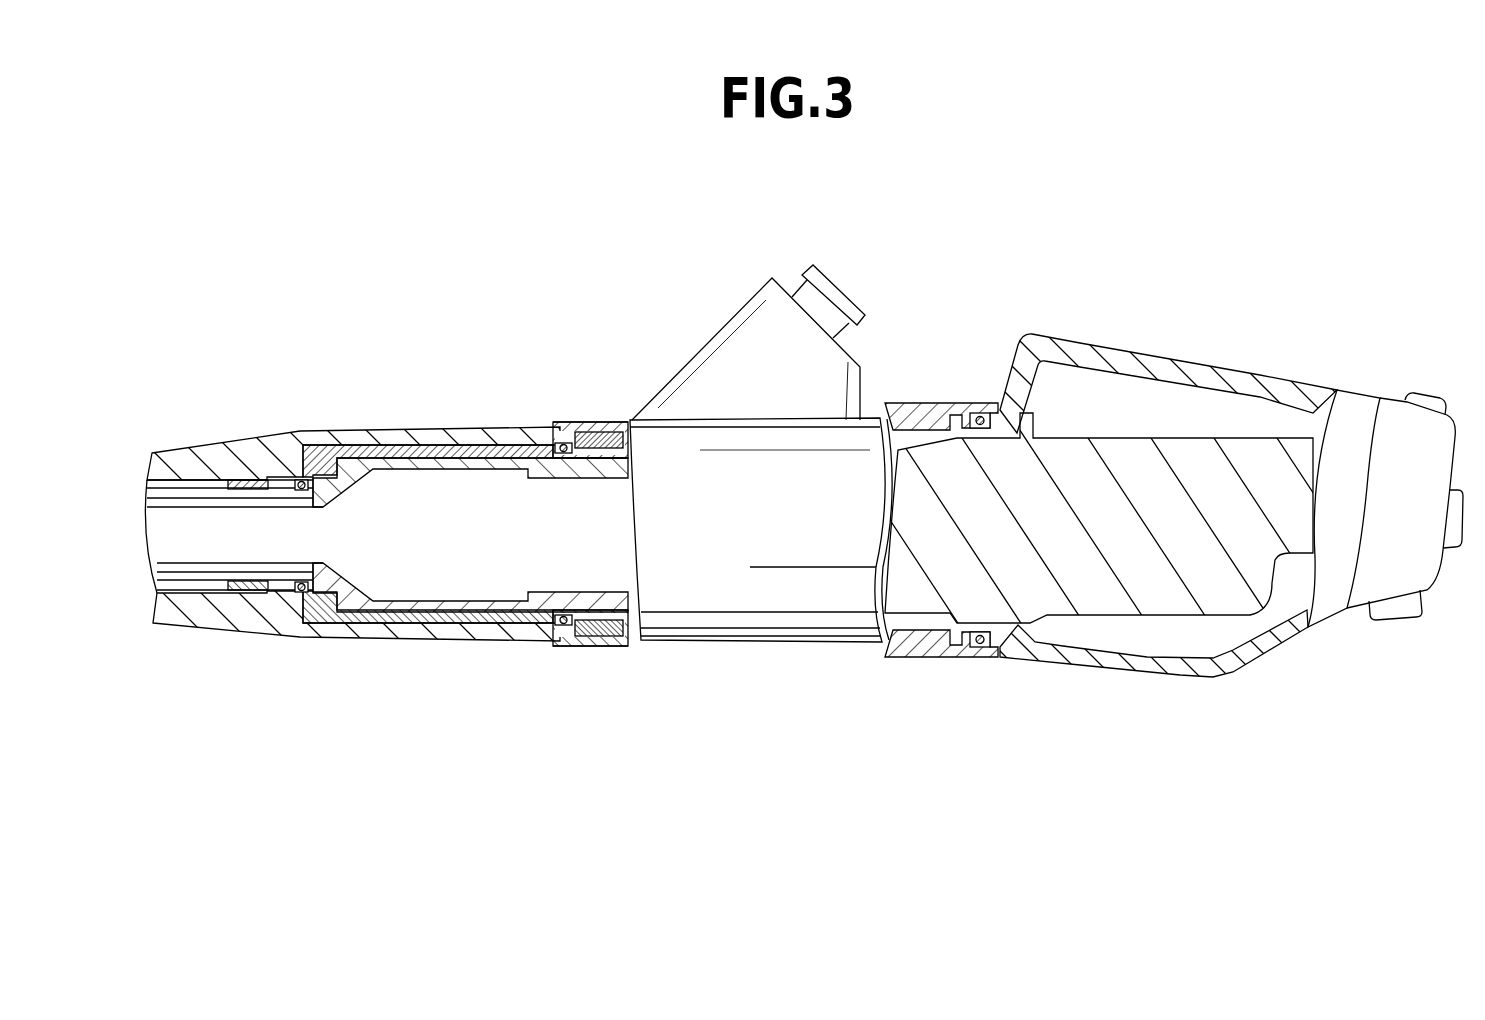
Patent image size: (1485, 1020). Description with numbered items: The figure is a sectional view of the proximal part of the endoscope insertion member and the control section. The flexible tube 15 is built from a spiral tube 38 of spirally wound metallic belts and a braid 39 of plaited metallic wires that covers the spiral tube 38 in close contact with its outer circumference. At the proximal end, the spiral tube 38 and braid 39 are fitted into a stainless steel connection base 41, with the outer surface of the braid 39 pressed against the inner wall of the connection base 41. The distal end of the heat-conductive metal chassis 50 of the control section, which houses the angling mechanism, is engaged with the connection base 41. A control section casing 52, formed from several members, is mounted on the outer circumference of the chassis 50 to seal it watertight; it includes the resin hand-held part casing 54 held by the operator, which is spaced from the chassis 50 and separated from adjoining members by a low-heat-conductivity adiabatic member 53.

The flexible tube 15 is at (182, 530).
The spiral tube 38 is at (215, 507).
The braid 39 is at (238, 500).
The connection base 41 is at (277, 482).
The chassis 50 is at (420, 463).
The control section casing 52 is at (618, 420).
The adiabatic member 53 is at (573, 424).
The hand-held part casing 54 is at (590, 424).